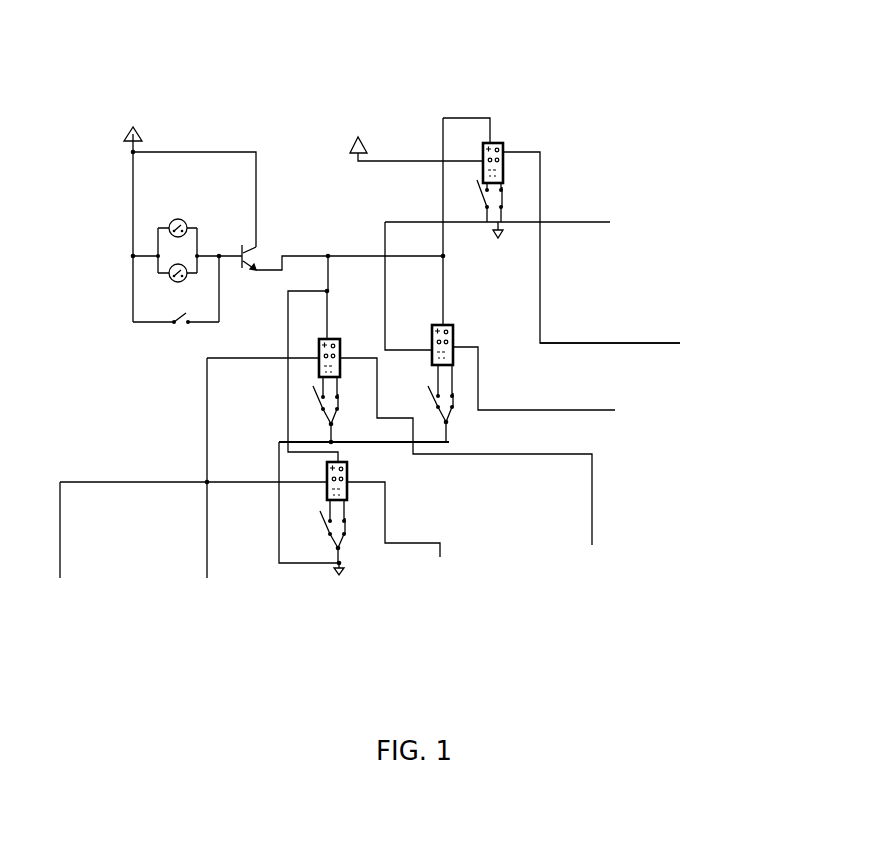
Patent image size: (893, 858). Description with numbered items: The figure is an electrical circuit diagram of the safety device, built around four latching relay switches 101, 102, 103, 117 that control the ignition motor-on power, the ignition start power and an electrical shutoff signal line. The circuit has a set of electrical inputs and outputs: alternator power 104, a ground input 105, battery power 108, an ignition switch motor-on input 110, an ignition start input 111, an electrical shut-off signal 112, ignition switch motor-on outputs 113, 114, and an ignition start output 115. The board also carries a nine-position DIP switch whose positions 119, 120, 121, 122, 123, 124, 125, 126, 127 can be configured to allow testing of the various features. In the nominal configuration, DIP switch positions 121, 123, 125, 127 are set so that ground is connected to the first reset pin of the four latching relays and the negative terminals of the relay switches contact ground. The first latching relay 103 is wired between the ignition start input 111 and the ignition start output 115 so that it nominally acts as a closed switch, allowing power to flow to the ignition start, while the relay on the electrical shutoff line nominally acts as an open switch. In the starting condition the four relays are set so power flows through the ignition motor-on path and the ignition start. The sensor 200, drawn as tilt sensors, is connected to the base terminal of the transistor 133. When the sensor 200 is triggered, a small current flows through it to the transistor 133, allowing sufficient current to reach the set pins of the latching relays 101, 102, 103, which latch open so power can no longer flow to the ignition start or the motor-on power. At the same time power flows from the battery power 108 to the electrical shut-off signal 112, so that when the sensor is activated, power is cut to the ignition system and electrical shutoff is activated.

The latching relay switch 101 is at (323, 480).
The latching relay switch 102 is at (339, 351).
The latching relay switch 103 is at (426, 343).
The alternator power 104 is at (137, 84).
The ground input 105 is at (339, 617).
The battery power 108 is at (389, 106).
The ignition switch motor-on input 110 is at (166, 523).
The ignition start input 111 is at (556, 264).
The electrical shut-off signal 112 is at (681, 355).
The ignition switch motor-on output 113 is at (422, 561).
The ignition switch motor-on output 114 is at (497, 494).
The ignition start output 115 is at (596, 416).
The latching relay switch 117 is at (505, 154).
The DIP switch position 119 is at (176, 309).
The DIP switch position 120 is at (314, 524).
The DIP switch position 121 is at (357, 531).
The DIP switch position 122 is at (312, 403).
The DIP switch position 123 is at (350, 409).
The DIP switch position 124 is at (419, 393).
The DIP switch position 125 is at (466, 403).
The DIP switch position 126 is at (470, 201).
The DIP switch position 127 is at (516, 202).
The transistor 133 is at (285, 253).
The sensor 200 is at (175, 230).